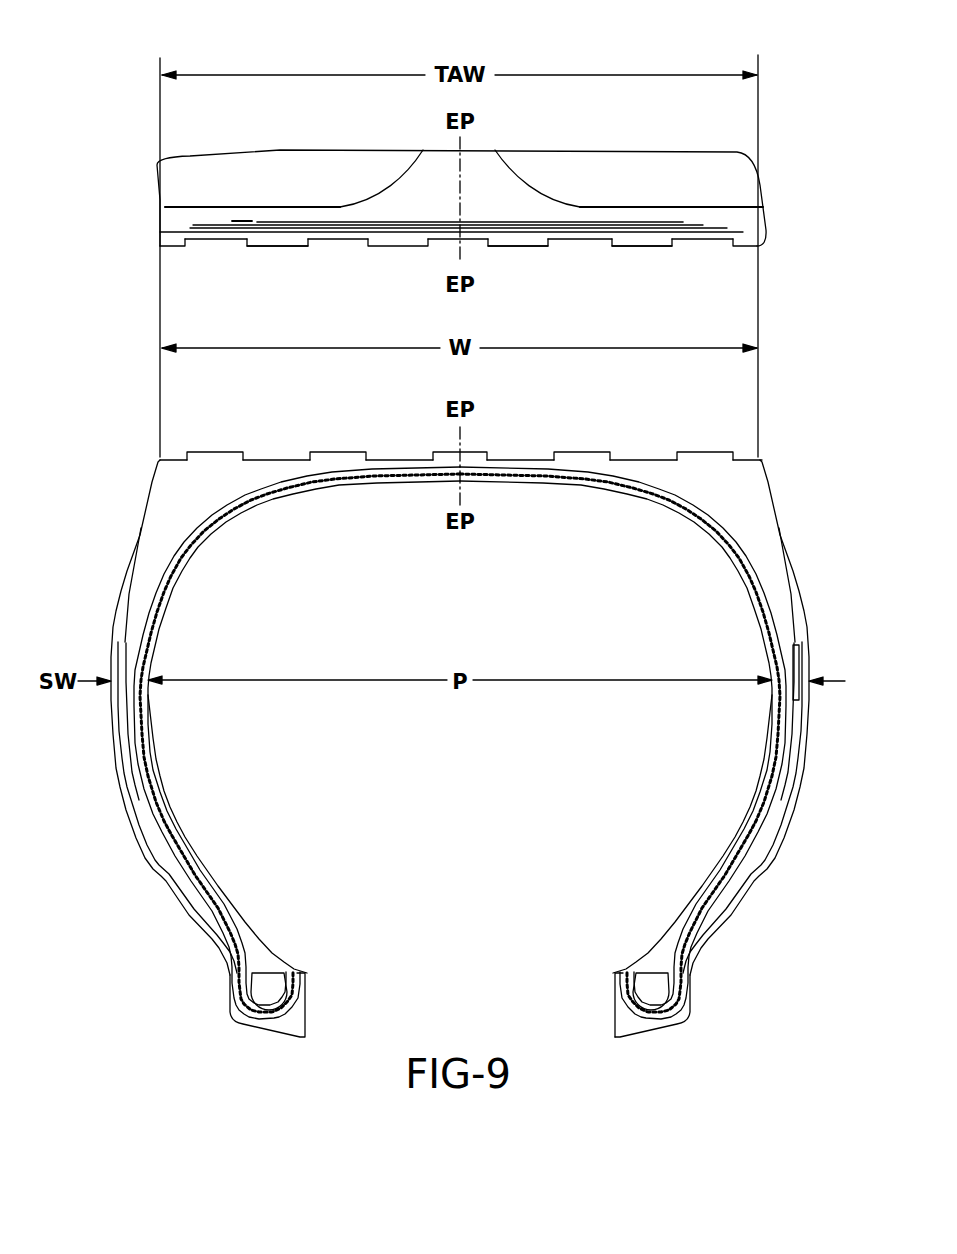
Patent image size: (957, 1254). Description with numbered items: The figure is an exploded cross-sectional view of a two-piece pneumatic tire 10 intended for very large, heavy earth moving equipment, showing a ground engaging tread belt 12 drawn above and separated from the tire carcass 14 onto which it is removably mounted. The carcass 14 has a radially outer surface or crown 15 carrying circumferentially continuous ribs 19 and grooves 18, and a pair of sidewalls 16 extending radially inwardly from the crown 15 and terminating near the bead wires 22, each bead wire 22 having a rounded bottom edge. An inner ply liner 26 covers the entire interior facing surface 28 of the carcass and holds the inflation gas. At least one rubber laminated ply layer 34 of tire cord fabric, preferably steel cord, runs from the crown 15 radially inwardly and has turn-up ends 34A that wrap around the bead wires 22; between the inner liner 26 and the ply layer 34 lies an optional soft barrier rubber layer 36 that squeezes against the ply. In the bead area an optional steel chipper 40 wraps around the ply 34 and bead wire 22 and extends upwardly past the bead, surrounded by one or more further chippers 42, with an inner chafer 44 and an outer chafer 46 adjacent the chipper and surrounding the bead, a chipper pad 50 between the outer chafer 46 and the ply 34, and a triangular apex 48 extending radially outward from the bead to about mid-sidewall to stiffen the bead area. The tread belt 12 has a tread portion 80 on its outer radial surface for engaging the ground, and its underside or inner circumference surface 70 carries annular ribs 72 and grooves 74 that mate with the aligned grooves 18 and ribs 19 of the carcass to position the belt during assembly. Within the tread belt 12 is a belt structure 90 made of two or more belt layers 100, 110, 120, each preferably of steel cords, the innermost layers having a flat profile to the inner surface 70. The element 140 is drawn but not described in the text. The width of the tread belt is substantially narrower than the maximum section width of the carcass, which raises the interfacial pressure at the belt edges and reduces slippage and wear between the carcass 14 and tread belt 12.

The two-piece pneumatic tire 10 is at (789, 158).
The tread belt 12 is at (116, 110).
The tire carcass 14 is at (114, 484).
The crown 15 is at (214, 435).
The tire sidewall 16 is at (793, 544).
The groove 18 is at (275, 458).
The rib 19 is at (342, 451).
The bead wire 22 is at (268, 988).
The inner ply liner 26 is at (200, 847).
The interior facing surface 28 is at (626, 503).
The ply layer 34 is at (742, 568).
The turn-up end 34A is at (798, 706).
The barrier rubber layer 36 is at (165, 795).
The steel chipper 40 is at (620, 1017).
The chipper 42 is at (613, 973).
The inner chafer 44 is at (640, 1027).
The outer chafer 46 is at (737, 912).
The apex 48 is at (678, 927).
The chipper pad 50 is at (170, 873).
The inner circumference surface 70 is at (403, 260).
The rib 72 is at (287, 249).
The groove 74 is at (222, 243).
The tread portion 80 is at (535, 166).
The belt structure 90 is at (285, 216).
The belt layer 100 is at (151, 241).
The belt layer 110 is at (160, 229).
The belt layer 120 is at (213, 226).
The belt edge strip 140 is at (220, 226).